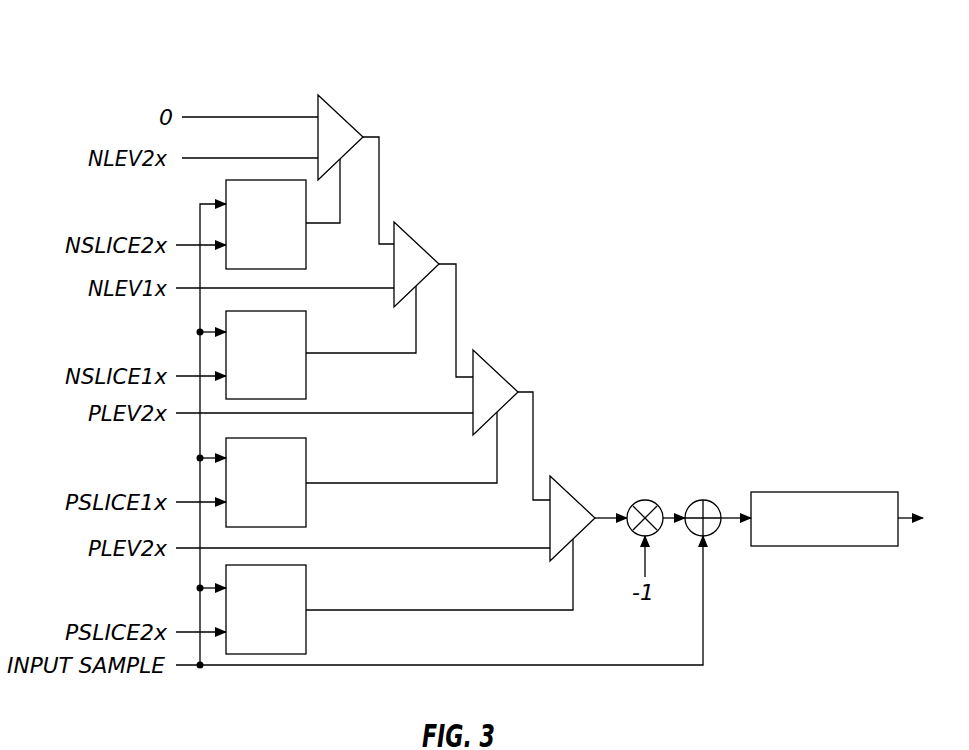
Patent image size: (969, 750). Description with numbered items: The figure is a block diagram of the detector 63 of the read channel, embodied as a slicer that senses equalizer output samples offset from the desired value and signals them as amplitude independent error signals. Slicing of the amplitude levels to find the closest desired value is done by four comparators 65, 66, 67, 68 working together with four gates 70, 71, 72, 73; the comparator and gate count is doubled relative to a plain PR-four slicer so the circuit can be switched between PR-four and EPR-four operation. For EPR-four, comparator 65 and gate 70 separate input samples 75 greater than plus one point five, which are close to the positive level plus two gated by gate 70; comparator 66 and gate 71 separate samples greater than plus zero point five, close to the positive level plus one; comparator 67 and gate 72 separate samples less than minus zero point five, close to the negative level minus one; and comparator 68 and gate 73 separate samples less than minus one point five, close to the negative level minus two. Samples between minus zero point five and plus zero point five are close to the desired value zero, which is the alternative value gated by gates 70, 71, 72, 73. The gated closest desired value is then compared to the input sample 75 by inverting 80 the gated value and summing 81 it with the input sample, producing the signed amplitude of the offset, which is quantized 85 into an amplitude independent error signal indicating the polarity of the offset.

The detector 63 is at (736, 48).
The comparator 65 is at (306, 243).
The comparator 66 is at (306, 373).
The comparator 67 is at (306, 503).
The comparator 68 is at (306, 630).
The gate 70 is at (344, 116).
The gate 71 is at (418, 243).
The gate 72 is at (494, 369).
The gate 73 is at (576, 494).
The input sample 75 is at (190, 668).
The inverting 80 is at (643, 498).
The summing 81 is at (703, 498).
The quantizer 85 is at (857, 492).